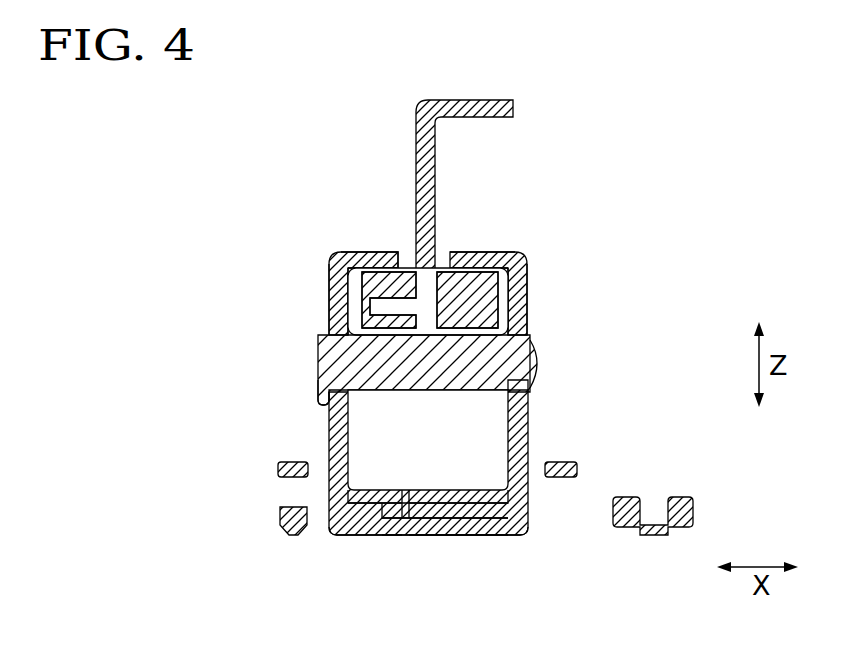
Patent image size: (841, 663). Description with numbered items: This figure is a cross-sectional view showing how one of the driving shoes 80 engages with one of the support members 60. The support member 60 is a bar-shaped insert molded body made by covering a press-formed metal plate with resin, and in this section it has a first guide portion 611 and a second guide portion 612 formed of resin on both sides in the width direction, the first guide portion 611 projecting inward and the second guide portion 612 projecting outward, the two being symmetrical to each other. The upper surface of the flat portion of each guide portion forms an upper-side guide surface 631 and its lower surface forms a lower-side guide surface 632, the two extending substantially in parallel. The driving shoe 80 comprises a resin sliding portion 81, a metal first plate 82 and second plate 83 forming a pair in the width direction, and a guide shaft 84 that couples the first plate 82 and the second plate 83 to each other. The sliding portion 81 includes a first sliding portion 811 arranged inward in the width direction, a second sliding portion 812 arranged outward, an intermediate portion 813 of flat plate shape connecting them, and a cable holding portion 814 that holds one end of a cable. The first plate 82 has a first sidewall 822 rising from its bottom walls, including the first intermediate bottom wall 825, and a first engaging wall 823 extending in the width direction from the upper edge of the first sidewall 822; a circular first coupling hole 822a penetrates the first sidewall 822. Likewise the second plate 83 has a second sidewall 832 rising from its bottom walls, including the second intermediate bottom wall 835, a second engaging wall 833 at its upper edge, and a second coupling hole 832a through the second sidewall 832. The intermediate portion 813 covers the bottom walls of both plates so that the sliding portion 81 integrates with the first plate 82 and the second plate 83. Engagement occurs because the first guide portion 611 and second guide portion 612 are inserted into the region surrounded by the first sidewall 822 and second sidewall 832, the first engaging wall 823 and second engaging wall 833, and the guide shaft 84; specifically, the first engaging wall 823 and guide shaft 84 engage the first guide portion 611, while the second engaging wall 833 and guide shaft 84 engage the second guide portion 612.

The support member 60 is at (412, 104).
The driving shoe 80 is at (230, 341).
The sliding portion 81 is at (272, 463).
The first sliding portion 811 is at (282, 515).
The second sliding portion 812 is at (567, 480).
The intermediate portion 813 is at (425, 536).
The cable holding portion 814 is at (693, 525).
The first plate 82 is at (341, 246).
The first sidewall 822 is at (332, 272).
The first coupling hole 822a is at (322, 382).
The first engaging wall 823 is at (372, 252).
The first intermediate bottom wall 825 is at (370, 536).
The second plate 83 is at (522, 244).
The second sidewall 832 is at (526, 272).
The second coupling hole 832a is at (530, 378).
The second engaging wall 833 is at (490, 252).
The second intermediate bottom wall 835 is at (482, 536).
The guide shaft 84 is at (540, 350).
The first guide portion 611 is at (362, 300).
The second guide portion 612 is at (506, 300).
The upper-side guide surface 631 is at (458, 282).
The lower-side guide surface 632 is at (395, 338).